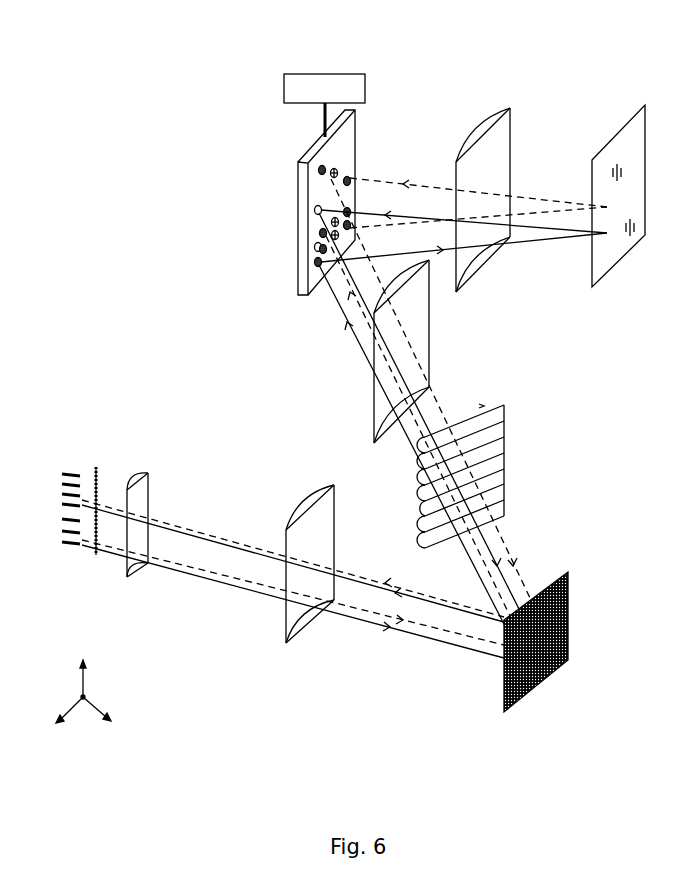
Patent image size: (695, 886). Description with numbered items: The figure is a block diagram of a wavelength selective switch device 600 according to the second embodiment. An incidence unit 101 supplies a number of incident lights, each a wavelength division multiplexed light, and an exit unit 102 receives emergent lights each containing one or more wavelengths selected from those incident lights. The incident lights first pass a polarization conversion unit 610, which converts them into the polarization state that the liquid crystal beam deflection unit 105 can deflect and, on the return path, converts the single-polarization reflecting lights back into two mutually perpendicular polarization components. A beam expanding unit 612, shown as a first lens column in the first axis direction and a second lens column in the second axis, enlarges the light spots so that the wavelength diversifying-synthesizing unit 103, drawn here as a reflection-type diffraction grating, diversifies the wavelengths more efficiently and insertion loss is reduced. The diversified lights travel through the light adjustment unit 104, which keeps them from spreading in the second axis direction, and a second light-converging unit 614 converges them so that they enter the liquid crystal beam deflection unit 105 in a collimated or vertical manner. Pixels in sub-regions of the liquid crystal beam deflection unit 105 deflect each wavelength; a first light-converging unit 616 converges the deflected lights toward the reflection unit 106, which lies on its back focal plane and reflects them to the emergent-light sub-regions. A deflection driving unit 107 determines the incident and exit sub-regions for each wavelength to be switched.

The wavelength selective switch device 600 is at (96, 32).
The deflection driving unit 107 is at (343, 105).
The liquid crystal beam deflection unit 105 is at (305, 202).
The first light-converging unit 616 is at (483, 192).
The reflection unit 106 is at (618, 192).
The second light-converging unit 614 is at (420, 351).
The light adjustment unit 104 is at (479, 476).
The wavelength diversifying-synthesizing unit 103 is at (556, 642).
The exit unit 102 is at (60, 472).
The incidence unit 101 is at (60, 516).
The polarization conversion unit 610 is at (97, 504).
The beam expanding unit 612 is at (327, 468).